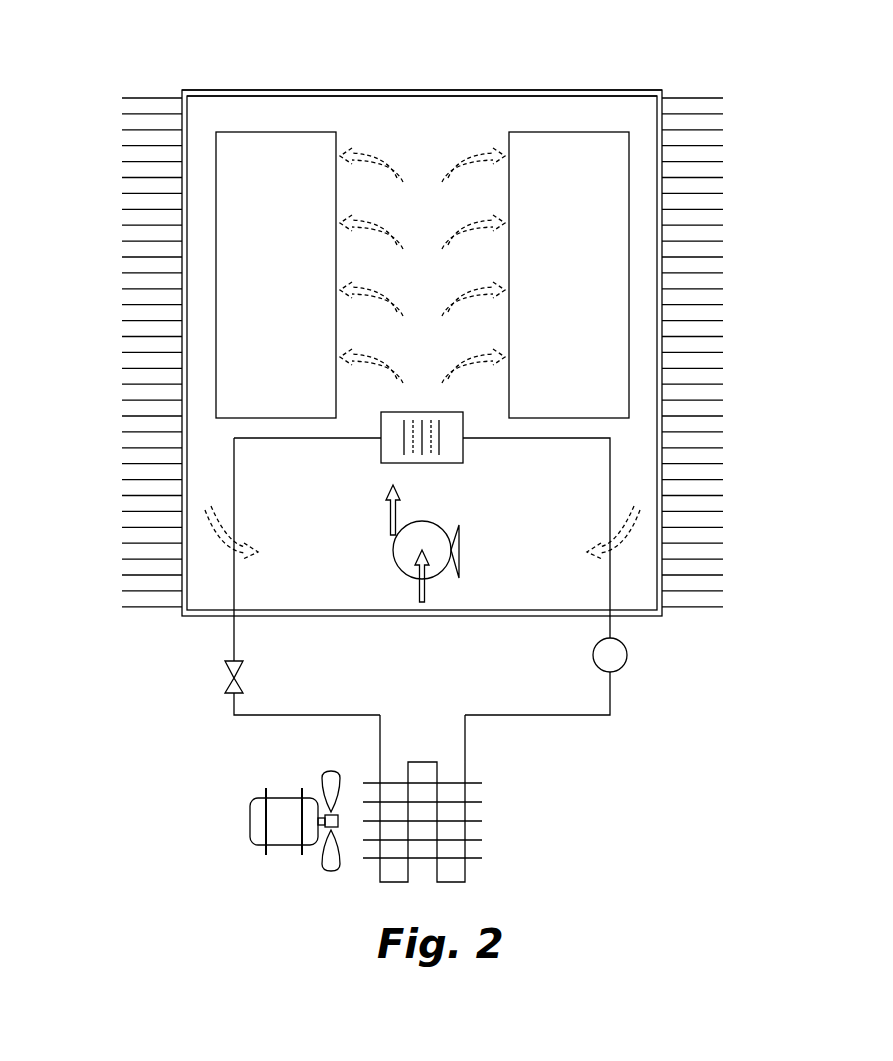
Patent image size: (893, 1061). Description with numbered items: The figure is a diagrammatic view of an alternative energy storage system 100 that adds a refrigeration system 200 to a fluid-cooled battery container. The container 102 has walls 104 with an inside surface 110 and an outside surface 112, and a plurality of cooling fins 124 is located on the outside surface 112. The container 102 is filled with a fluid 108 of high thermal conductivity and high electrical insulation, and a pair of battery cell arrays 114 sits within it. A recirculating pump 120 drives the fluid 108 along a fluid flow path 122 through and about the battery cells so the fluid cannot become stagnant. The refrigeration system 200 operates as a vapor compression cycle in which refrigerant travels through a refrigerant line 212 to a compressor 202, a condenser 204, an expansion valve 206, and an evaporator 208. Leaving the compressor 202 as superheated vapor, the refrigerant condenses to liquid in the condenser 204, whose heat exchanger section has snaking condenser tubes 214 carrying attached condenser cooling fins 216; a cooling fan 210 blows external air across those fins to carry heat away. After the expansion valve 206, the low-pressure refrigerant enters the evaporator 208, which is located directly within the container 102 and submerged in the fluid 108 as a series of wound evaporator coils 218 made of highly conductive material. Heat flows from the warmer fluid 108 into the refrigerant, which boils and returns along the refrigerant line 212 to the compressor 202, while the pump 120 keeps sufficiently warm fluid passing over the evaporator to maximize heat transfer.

The energy storage system 100 is at (87, 218).
The container 102 is at (634, 90).
The walls 104 is at (447, 90).
The fluid 108 is at (408, 278).
The inside surface 110 is at (283, 90).
The outside surface 112 is at (357, 90).
The battery cell arrays 114 is at (247, 170).
The recirculating pump 120 is at (406, 556).
The fluid flow path 122 is at (478, 150).
The cooling fins 124 is at (132, 130).
The refrigeration system 200 is at (620, 738).
The compressor 202 is at (627, 660).
The condenser 204 is at (445, 815).
The expansion valve 206 is at (228, 678).
The evaporator 208 is at (381, 450).
The cooling fan 210 is at (282, 837).
The refrigerant line 212 is at (553, 715).
The condenser tubes 214 is at (400, 880).
The condenser cooling fins 216 is at (470, 823).
The evaporator coils 218 is at (440, 443).